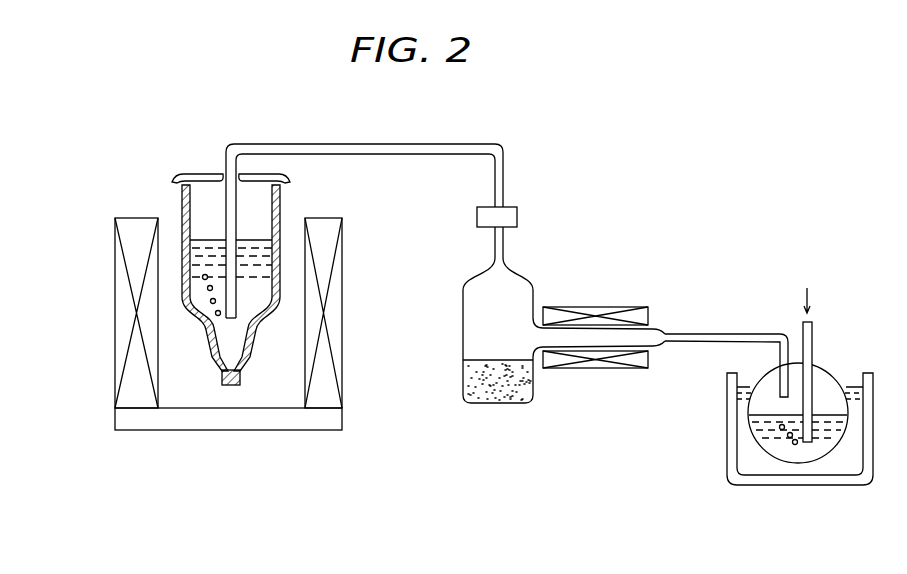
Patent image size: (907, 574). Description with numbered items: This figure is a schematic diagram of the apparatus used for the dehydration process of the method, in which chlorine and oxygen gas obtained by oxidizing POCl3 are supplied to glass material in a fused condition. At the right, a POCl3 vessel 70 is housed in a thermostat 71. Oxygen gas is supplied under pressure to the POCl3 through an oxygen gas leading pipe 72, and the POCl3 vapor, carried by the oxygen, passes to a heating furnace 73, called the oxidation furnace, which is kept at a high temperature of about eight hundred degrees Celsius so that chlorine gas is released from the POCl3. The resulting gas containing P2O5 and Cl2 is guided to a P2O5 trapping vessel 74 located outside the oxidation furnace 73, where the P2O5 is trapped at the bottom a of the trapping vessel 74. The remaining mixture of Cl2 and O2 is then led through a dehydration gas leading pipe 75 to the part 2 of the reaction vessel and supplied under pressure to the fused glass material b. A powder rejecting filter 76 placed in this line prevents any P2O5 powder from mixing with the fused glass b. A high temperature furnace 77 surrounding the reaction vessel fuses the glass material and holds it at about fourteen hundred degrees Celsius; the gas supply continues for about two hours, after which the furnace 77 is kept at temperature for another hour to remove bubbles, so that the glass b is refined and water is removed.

The part of the reaction vessel 2 is at (278, 298).
The fused glass material b is at (197, 240).
The POCl3 vessel 70 is at (752, 430).
The thermostat 71 is at (727, 393).
The oxygen gas leading pipe 72 is at (812, 338).
The heating furnace (oxidation furnace) 73 is at (635, 307).
The P2O5 trapping vessel 74 is at (463, 355).
The bottom of the trapping vessel a is at (533, 390).
The dehydration gas leading pipe 75 is at (435, 155).
The powder rejecting filter 76 is at (517, 217).
The high temperature furnace 77 is at (115, 282).